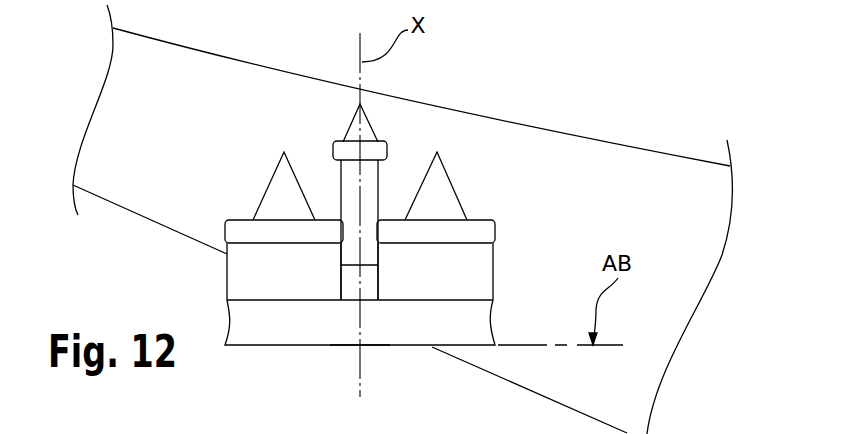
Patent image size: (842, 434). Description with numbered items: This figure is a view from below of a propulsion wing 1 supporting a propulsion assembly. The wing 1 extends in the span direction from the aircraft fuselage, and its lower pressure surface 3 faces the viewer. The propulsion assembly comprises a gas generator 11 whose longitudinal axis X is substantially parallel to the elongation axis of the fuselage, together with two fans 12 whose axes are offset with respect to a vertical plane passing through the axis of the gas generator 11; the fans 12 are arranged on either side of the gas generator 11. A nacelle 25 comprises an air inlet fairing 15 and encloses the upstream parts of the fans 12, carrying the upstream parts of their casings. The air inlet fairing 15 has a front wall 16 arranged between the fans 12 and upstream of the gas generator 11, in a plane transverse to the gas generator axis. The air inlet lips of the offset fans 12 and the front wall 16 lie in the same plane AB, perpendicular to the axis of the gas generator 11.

The propulsion wing 1 is at (623, 193).
The lower pressure surface 3 is at (575, 192).
The gas generator 11 is at (372, 179).
The fans 12 is at (262, 275).
The air inlet fairing 15 is at (291, 321).
The front wall 16 is at (350, 347).
The nacelle 25 is at (410, 322).